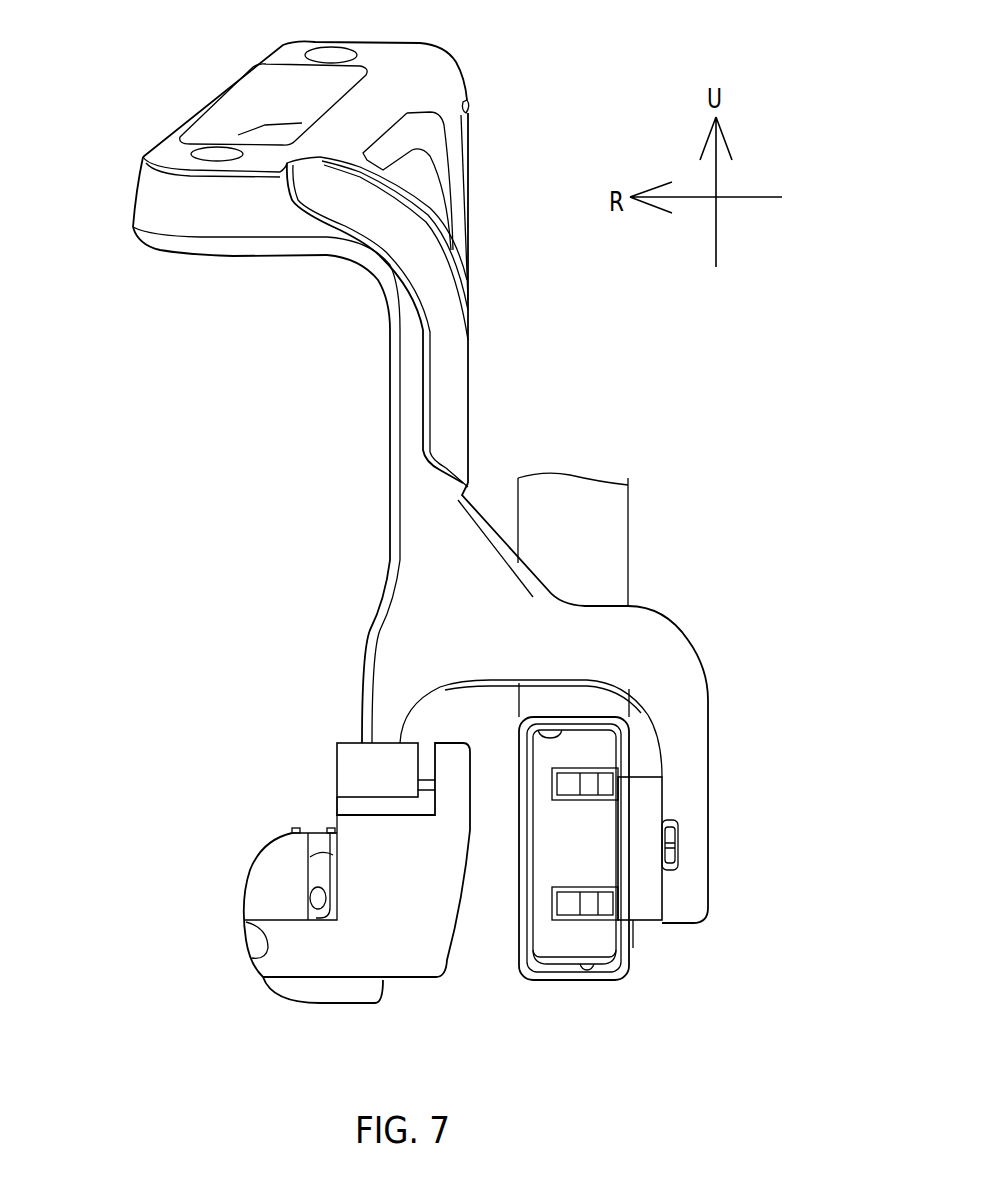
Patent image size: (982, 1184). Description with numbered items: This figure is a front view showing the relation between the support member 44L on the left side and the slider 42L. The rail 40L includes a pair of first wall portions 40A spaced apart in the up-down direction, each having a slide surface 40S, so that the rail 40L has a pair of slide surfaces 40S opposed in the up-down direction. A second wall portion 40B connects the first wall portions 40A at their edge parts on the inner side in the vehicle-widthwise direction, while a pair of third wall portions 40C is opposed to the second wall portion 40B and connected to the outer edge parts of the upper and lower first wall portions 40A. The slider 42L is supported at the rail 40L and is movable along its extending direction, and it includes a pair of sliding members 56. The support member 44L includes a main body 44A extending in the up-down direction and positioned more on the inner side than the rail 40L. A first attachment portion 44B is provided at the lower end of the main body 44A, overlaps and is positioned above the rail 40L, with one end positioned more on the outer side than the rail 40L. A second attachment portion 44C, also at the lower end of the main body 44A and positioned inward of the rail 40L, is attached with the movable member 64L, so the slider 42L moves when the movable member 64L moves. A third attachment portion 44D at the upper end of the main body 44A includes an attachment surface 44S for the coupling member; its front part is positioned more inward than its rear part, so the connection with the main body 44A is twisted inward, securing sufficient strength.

The attachment surface 44S is at (275, 53).
The third attachment portion 44D is at (147, 195).
The main body 44A is at (472, 393).
The support member 44L is at (389, 433).
The first attachment portion 44B is at (690, 843).
The second attachment portion 44C is at (387, 720).
The rail 40L is at (630, 513).
The first wall portion 40A is at (568, 717).
The second wall portion 40B is at (520, 900).
The third wall portion 40C is at (633, 757).
The slide surface 40S is at (543, 727).
The sliding member 56 is at (645, 777).
The slider 42L is at (648, 927).
The movable member 64L is at (415, 960).